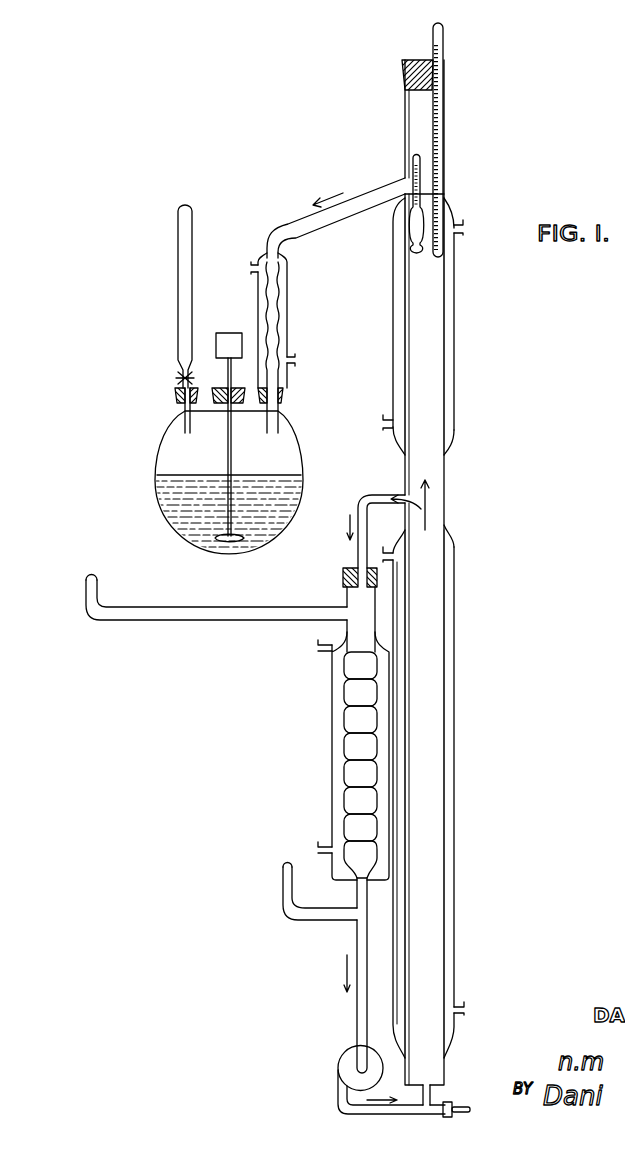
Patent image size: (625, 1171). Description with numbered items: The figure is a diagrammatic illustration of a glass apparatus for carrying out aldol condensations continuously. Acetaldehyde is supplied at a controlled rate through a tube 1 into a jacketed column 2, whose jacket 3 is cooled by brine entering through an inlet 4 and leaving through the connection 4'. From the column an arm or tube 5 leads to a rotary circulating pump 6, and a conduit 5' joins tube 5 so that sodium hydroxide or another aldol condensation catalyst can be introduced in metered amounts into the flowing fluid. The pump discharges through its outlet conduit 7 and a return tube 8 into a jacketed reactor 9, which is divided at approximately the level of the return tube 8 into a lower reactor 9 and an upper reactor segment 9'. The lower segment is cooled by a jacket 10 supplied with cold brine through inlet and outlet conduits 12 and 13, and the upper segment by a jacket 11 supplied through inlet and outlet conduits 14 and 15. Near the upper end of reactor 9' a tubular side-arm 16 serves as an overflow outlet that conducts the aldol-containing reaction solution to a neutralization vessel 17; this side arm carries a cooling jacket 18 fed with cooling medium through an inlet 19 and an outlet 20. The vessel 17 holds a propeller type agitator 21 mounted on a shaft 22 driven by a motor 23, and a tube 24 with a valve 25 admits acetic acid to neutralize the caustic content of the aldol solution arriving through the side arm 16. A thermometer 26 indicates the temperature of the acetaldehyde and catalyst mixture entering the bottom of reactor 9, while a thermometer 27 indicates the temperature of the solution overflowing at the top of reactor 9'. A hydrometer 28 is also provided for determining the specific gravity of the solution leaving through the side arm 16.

The acetaldehyde supply tube 1 is at (92, 556).
The jacketed column 2 is at (345, 670).
The jacket 3 is at (332, 722).
The inlet 4 is at (320, 861).
The outlet 4' is at (309, 637).
The arm or tube 5 is at (342, 975).
The catalyst conduit 5' is at (286, 853).
The rotary circulating pump 6 is at (339, 1070).
The outlet conduit 7 is at (338, 1103).
The return tube 8 is at (371, 493).
The jacketed reactor 9 is at (446, 794).
The upper reactor segment 9' is at (451, 326).
The jacket 10 is at (455, 756).
The jacket 11 is at (455, 312).
The inlet conduit 12 is at (464, 1007).
The outlet conduit 13 is at (391, 555).
The inlet conduit 14 is at (389, 420).
The outlet conduit 15 is at (463, 223).
The tubular side-arm 16 is at (370, 213).
The neutralization vessel 17 is at (163, 448).
The cooling jacket 18 is at (289, 295).
The inlet 19 is at (293, 357).
The outlet 20 is at (257, 266).
The agitator 21 is at (245, 541).
The shaft 22 is at (232, 458).
The motor 23 is at (230, 333).
The tube 24 is at (185, 172).
The valve 25 is at (177, 378).
The thermometer 26 is at (452, 1124).
The thermometer 27 is at (441, 31).
The hydrometer 28 is at (362, 111).